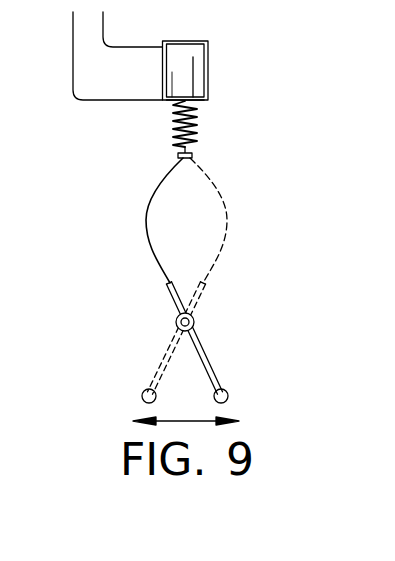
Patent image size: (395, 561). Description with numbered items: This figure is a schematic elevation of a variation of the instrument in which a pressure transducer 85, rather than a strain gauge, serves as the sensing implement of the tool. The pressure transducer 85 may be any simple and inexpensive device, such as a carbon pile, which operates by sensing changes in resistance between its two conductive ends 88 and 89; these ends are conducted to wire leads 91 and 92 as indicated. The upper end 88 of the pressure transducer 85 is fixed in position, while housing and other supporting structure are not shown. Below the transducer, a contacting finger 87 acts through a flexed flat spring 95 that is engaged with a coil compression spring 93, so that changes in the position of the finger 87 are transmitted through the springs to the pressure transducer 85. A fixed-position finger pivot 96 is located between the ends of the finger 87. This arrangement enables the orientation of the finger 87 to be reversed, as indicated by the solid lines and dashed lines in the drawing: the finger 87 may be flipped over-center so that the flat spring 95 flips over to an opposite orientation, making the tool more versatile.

The pressure transducer 85 is at (193, 71).
The contacting finger 87 is at (208, 362).
The upper conductive end 88 is at (196, 41).
The lower conductive end 89 is at (207, 101).
The wire lead 91 is at (137, 47).
The wire lead 92 is at (112, 100).
The compression spring 93 is at (195, 130).
The flat spring 95 is at (146, 220).
The finger pivot 96 is at (177, 319).